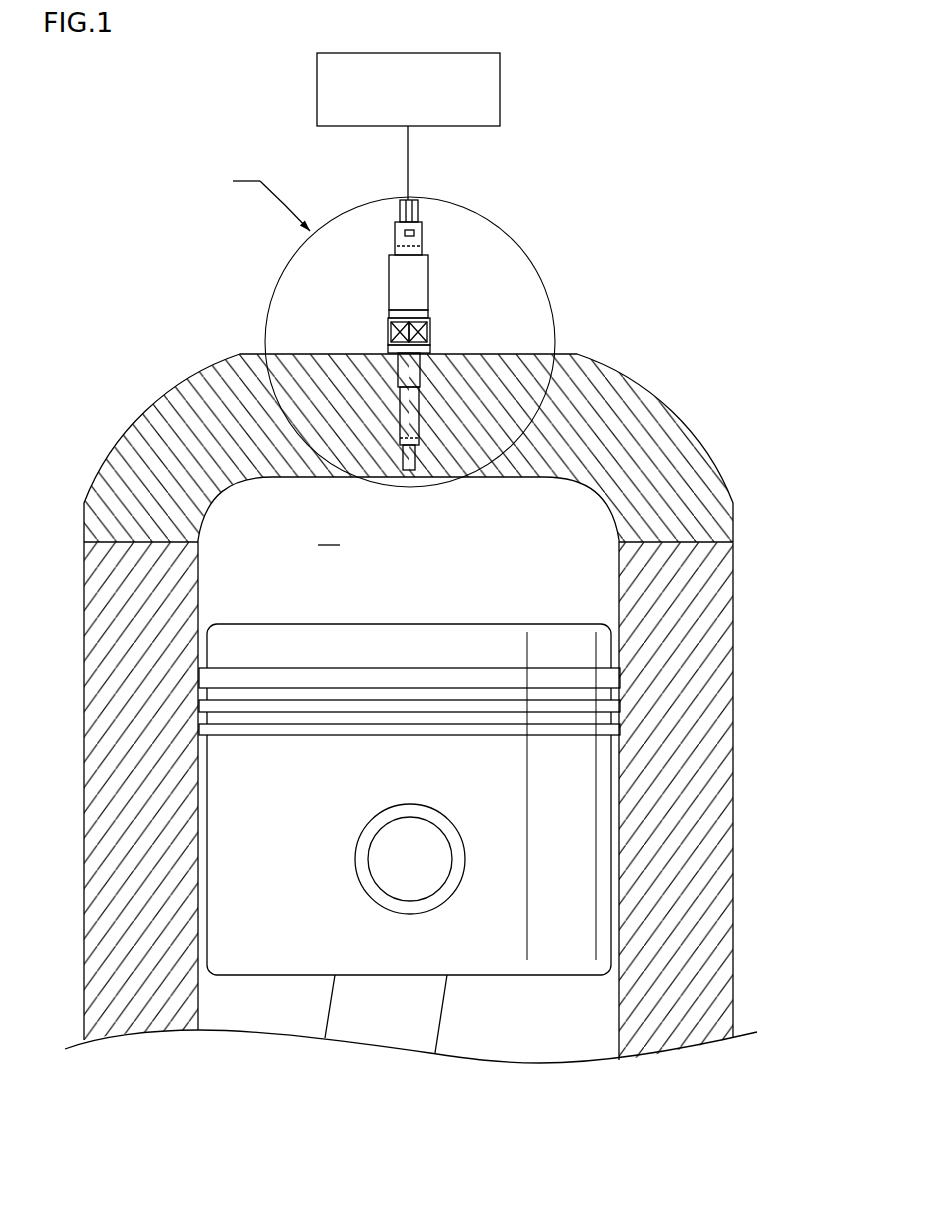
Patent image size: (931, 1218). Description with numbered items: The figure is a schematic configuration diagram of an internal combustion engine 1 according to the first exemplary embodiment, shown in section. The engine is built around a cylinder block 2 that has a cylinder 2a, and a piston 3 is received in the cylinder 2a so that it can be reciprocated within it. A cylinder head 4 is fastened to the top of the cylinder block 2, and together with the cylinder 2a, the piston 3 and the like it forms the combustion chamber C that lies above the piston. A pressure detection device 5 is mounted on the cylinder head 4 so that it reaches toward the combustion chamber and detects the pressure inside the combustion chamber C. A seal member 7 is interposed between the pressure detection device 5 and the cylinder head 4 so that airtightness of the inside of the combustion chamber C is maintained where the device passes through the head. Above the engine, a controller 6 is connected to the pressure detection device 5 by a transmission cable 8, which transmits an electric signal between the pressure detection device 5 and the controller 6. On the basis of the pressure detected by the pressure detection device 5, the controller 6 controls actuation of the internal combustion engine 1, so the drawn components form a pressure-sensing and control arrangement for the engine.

The internal combustion engine 1 is at (258, 107).
The cylinder block 2 is at (745, 570).
The cylinder 2a is at (733, 768).
The piston 3 is at (428, 622).
The cylinder head 4 is at (650, 392).
The pressure detection device 5 is at (453, 233).
The controller 6 is at (500, 88).
The seal member 7 is at (445, 343).
The transmission cable 8 is at (408, 158).